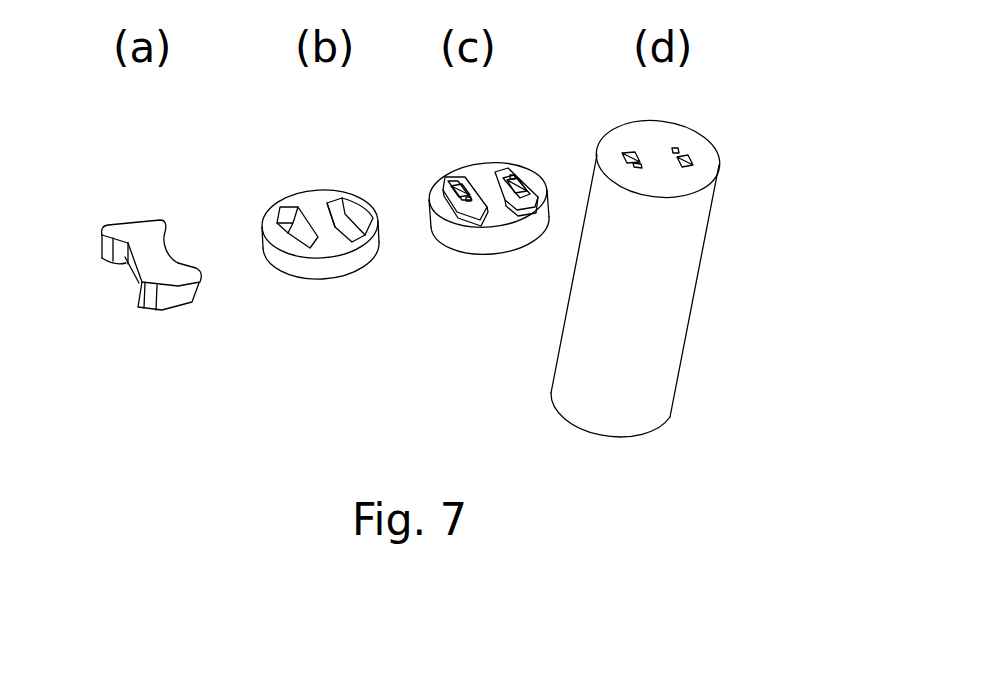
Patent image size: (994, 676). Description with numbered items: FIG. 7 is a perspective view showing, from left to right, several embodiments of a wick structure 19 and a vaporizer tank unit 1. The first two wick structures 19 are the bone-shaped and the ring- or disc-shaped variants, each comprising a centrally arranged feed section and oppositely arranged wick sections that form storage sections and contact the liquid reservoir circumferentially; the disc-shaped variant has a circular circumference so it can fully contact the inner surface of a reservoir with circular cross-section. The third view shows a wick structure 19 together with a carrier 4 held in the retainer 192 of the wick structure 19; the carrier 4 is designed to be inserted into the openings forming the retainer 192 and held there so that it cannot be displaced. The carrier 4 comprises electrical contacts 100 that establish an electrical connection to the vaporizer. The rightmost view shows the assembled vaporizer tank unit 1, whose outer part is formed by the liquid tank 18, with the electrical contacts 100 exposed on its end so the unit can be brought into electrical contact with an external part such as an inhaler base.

The vaporizer tank unit 1 is at (600, 278).
The carrier 4 is at (455, 187).
The liquid tank 18 is at (595, 160).
The wick structure 19 is at (323, 242).
The electrical contacts 100 is at (517, 190).
The retainer 192 is at (293, 238).